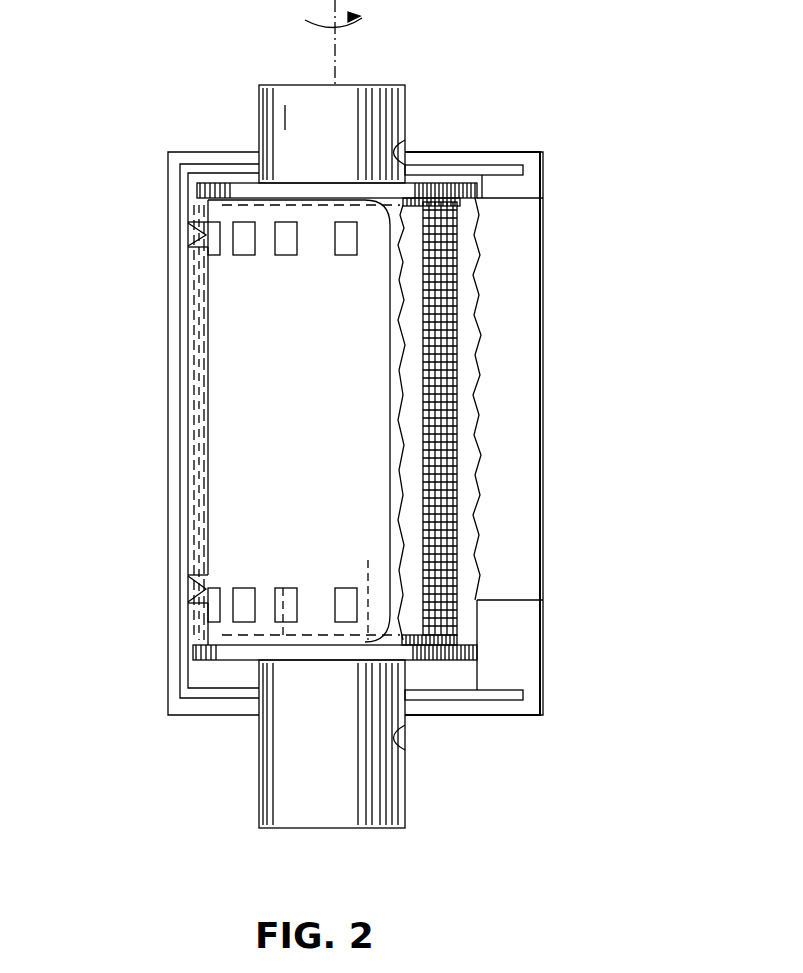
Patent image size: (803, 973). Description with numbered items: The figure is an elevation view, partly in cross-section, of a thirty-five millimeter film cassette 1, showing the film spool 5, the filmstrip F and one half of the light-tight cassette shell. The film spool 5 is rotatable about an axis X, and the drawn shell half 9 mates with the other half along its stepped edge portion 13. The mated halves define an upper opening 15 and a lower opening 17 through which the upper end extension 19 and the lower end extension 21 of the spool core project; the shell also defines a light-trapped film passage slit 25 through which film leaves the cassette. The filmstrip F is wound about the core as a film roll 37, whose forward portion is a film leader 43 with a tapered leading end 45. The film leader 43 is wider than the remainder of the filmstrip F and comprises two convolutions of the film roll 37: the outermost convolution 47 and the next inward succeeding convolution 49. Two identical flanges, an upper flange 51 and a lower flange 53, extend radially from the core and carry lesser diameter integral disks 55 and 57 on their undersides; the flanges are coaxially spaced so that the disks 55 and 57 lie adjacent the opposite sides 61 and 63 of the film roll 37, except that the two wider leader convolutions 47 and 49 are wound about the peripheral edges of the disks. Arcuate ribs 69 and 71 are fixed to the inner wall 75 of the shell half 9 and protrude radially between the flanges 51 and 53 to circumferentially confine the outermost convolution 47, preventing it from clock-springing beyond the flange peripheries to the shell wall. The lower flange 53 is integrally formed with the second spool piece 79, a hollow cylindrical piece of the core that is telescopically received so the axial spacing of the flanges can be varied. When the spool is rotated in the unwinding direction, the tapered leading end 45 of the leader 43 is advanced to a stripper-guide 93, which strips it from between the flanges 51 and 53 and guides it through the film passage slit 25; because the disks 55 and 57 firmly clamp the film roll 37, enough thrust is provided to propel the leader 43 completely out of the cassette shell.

The film cassette 1 is at (142, 287).
The film spool 5 is at (196, 463).
The shell half 9 is at (168, 560).
The stepped edge portion 13 is at (183, 540).
The upper opening 15 is at (410, 150).
The lower opening 17 is at (403, 740).
The upper end extension 19 is at (405, 110).
The lower end extension 21 is at (400, 805).
The film passage slit 25 is at (517, 378).
The film roll 37 is at (196, 483).
The film leader 43 is at (238, 318).
The tapered leading end 45 is at (399, 353).
The outermost convolution 47 is at (220, 413).
The next inward succeeding convolution 49 is at (457, 540).
The upper flange 51 is at (197, 190).
The lower flange 53 is at (193, 652).
The integral disk 55 is at (268, 210).
The integral disk 57 is at (235, 655).
The side of film roll 61 is at (330, 200).
The side of film roll 63 is at (296, 640).
The arcuate rib 69 is at (198, 240).
The arcuate rib 71 is at (190, 590).
The inner wall 75 is at (200, 375).
The second spool piece 79 is at (330, 660).
The stripper-guide 93 is at (518, 350).
The filmstrip F is at (475, 452).
The axis X is at (306, 0).
The direction of rotation a is at (350, 18).